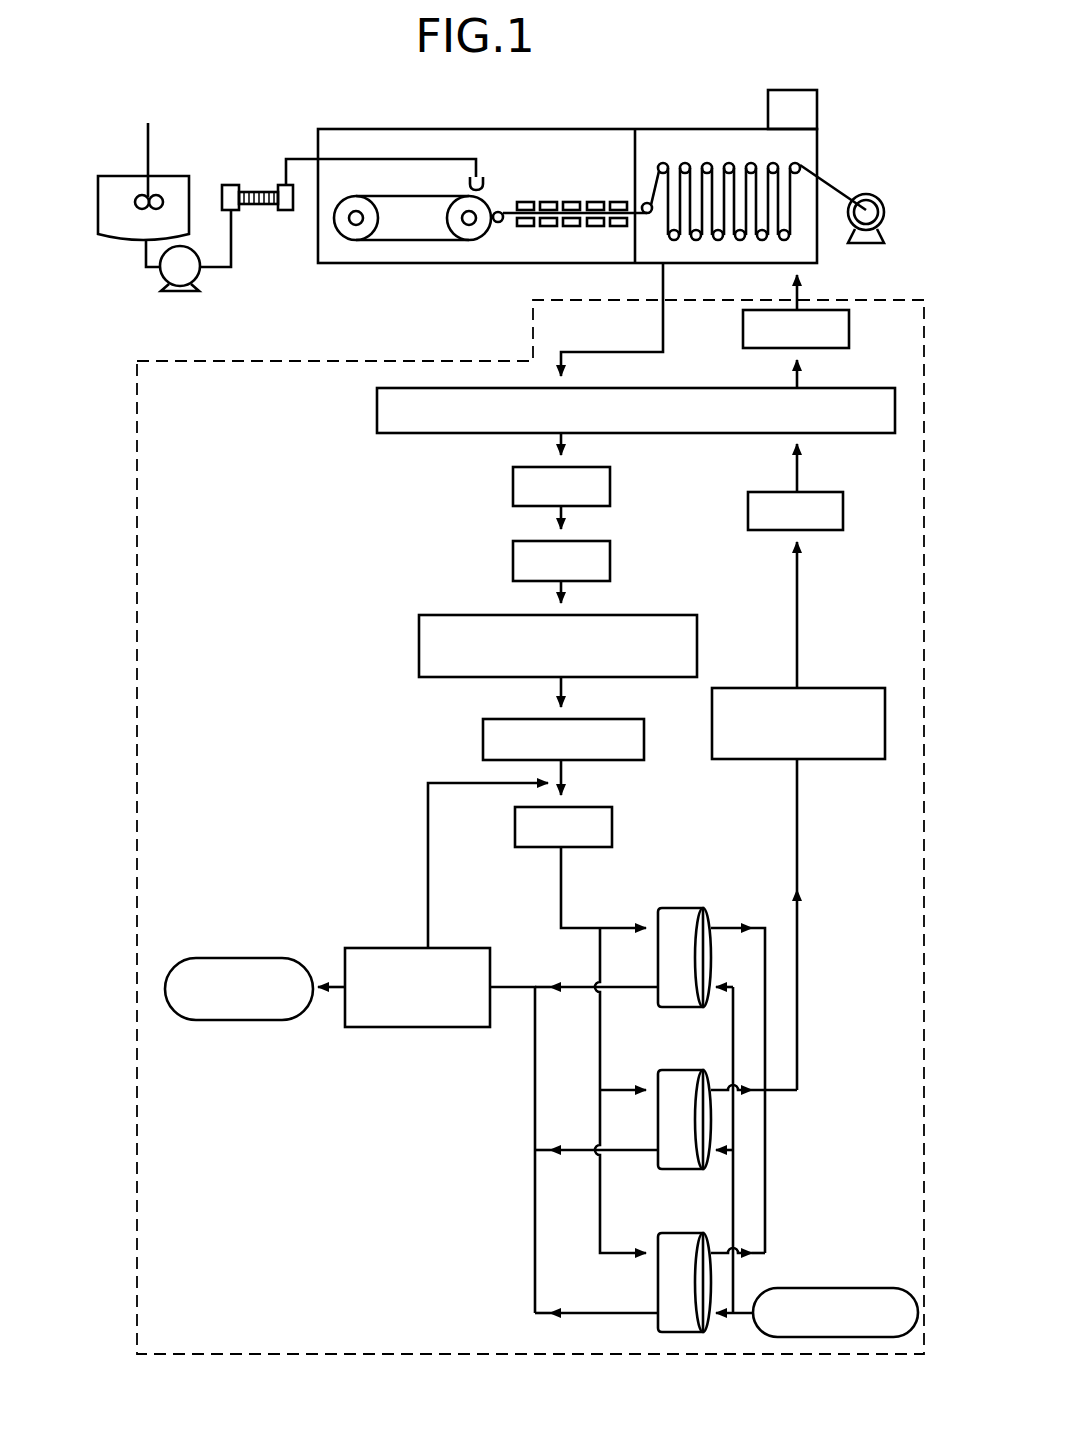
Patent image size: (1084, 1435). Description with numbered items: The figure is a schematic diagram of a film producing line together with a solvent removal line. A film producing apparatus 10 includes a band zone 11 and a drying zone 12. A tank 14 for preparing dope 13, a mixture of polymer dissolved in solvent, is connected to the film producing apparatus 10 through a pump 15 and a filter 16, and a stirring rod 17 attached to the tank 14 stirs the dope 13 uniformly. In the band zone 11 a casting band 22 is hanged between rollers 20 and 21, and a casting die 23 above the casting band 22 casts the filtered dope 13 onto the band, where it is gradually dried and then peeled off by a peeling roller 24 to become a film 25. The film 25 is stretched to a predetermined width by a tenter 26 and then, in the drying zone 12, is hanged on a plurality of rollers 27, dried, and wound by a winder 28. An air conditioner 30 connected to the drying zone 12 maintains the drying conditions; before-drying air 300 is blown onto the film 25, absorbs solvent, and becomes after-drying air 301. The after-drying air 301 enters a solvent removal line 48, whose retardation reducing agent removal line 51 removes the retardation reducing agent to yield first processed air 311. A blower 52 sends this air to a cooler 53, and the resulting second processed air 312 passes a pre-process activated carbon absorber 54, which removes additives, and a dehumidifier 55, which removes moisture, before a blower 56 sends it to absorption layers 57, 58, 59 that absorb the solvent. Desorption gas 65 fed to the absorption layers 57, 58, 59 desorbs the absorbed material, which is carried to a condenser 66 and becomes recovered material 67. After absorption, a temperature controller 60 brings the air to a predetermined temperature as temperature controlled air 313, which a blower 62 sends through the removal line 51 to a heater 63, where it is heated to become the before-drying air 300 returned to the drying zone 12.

The film producing apparatus 10 is at (372, 123).
The band zone 11 is at (583, 128).
The drying zone 12 is at (677, 128).
The dope 13 is at (120, 193).
The tank 14 is at (97, 203).
The pump 15 is at (165, 279).
The filter 16 is at (286, 213).
The stirring rod 17 is at (150, 141).
The roller 20 is at (357, 232).
The roller 21 is at (472, 231).
The casting band 22 is at (385, 242).
The casting die 23 is at (477, 177).
The peeling roller 24 is at (500, 211).
The film 25 is at (510, 221).
The tenter 26 is at (601, 198).
The rollers 27 is at (708, 165).
The winder 28 is at (868, 204).
The air conditioner 30 is at (818, 112).
The solvent removal line 48 is at (168, 448).
The retardation reducing agent removal line 51 is at (377, 408).
The blower 52 is at (513, 490).
The cooler 53 is at (513, 563).
The pre-process activated carbon absorber 54 is at (419, 635).
The dehumidifier 55 is at (483, 736).
The blower 56 is at (515, 827).
The absorption layer 57 is at (681, 907).
The absorption layer 58 is at (681, 1069).
The absorption layer 59 is at (681, 1232).
The temperature controller 60 is at (748, 760).
The blower 62 is at (845, 512).
The heater 63 is at (850, 330).
The desorption gas 65 is at (846, 1288).
The condenser 66 is at (370, 948).
The recovered material 67 is at (237, 958).
The before-drying air 300 is at (800, 291).
The after-drying air 301 is at (666, 322).
The first processed air 311 is at (560, 444).
The second processed air 312 is at (560, 591).
The temperature controlled air 313 is at (797, 556).